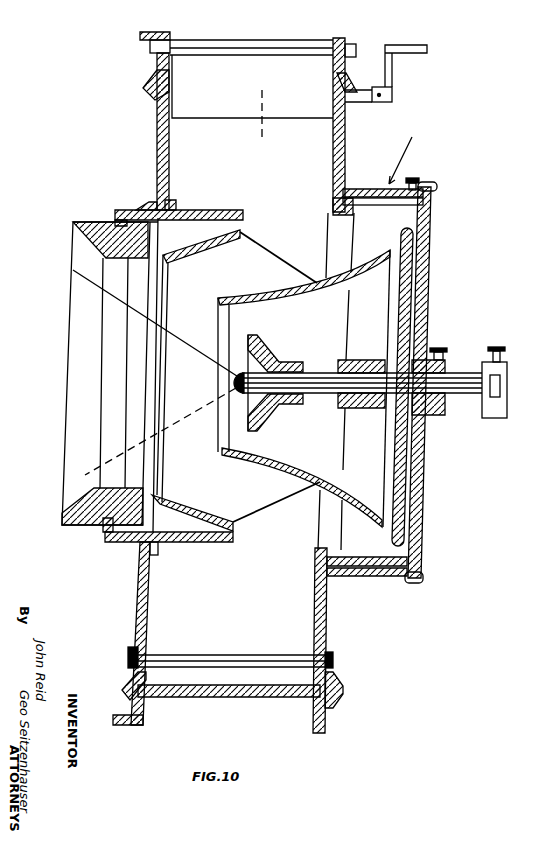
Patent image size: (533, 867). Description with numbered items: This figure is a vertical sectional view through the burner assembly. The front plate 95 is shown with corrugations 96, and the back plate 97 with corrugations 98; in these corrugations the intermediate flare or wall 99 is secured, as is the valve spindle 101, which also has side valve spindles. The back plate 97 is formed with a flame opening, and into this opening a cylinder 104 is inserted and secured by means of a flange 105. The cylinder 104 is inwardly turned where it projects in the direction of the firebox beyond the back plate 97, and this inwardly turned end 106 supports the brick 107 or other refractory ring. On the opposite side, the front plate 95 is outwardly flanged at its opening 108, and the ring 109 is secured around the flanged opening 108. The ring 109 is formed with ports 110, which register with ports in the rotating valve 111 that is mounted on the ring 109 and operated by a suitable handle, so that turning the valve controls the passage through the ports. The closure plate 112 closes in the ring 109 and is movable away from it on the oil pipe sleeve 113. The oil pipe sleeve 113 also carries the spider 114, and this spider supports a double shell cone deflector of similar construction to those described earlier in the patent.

The front plate 95 is at (346, 149).
The corrugations 96 is at (350, 88).
The back plate 97 is at (170, 158).
The corrugations 98 is at (122, 690).
The intermediate flare or wall 99 is at (226, 697).
The valve spindle 101 is at (364, 100).
The cylinder 104 is at (218, 212).
The flange 105 is at (176, 206).
The inwardly turned end 106 is at (115, 214).
The brick 107 is at (72, 258).
The flanged opening 108 is at (348, 216).
The ring 109 is at (358, 557).
The ports 110 is at (390, 205).
The rotating valve 111 is at (350, 192).
The closure plate 112 is at (433, 222).
The oil pipe sleeve 113 is at (475, 398).
The spider 114 is at (358, 329).